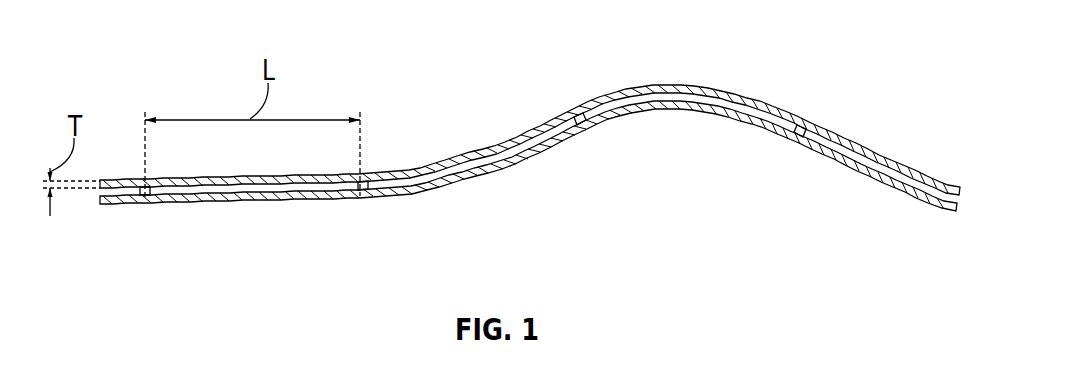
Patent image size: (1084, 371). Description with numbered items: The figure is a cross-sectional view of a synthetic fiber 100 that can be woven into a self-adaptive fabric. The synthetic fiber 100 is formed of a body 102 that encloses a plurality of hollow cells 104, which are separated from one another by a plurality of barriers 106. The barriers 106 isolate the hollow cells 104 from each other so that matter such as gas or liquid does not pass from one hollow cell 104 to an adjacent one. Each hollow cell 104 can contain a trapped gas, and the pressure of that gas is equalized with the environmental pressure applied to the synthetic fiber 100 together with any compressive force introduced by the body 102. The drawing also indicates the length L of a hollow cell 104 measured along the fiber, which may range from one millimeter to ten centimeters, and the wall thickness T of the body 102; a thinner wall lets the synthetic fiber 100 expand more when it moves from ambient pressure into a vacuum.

The synthetic fiber 100 is at (158, 46).
The body 102 is at (680, 84).
The hollow cells 104 is at (270, 200).
The barriers 106 is at (147, 196).